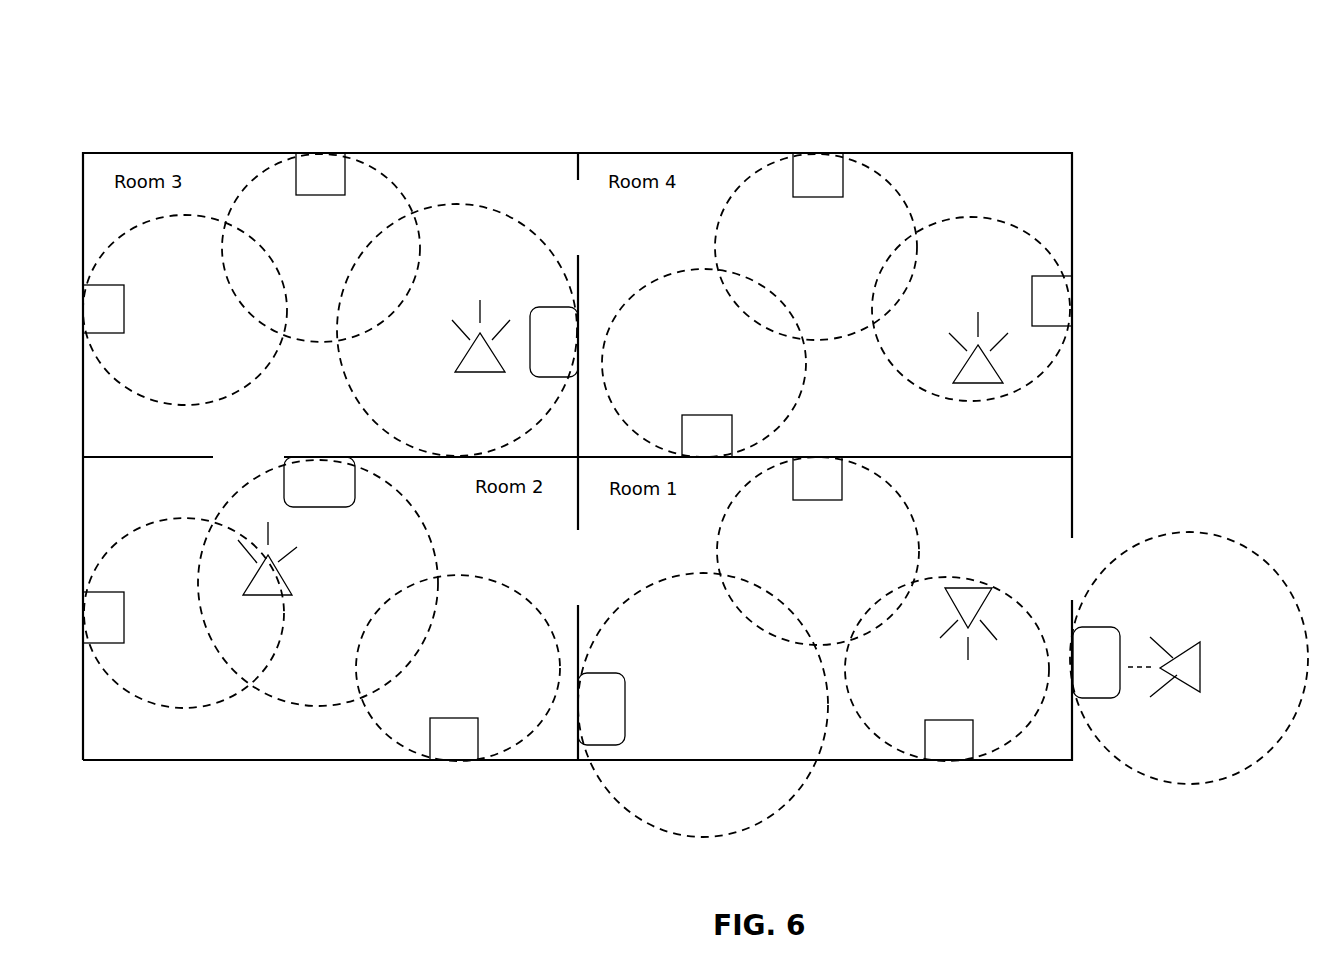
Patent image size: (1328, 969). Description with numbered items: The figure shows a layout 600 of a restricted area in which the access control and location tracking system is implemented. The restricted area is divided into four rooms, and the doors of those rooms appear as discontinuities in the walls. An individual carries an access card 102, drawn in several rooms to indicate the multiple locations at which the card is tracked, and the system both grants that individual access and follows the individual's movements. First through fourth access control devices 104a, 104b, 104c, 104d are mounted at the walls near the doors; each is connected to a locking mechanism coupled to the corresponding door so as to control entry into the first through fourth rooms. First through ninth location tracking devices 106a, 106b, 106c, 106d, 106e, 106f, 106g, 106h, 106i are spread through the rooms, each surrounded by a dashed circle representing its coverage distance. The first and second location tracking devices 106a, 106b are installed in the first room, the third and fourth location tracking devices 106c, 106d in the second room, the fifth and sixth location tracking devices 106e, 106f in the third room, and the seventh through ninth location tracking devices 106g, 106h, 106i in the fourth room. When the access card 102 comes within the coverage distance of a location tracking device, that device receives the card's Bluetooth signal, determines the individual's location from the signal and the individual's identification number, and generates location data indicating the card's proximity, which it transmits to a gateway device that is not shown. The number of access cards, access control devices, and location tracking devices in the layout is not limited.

The layout of the restricted area 600 is at (182, 70).
The access card 102 is at (480, 372).
The first access control device 104a is at (1098, 698).
The second access control device 104b is at (625, 710).
The third access control device 104c is at (320, 507).
The fourth access control device 104d is at (553, 307).
The first location tracking device 106a is at (950, 762).
The second location tracking device 106b is at (818, 500).
The third location tracking device 106c is at (455, 718).
The fourth location tracking device 106d is at (103, 643).
The fifth location tracking device 106e is at (124, 313).
The sixth location tracking device 106f is at (345, 176).
The seventh location tracking device 106g is at (705, 415).
The eighth location tracking device 106h is at (818, 197).
The ninth location tracking device 106i is at (1032, 301).